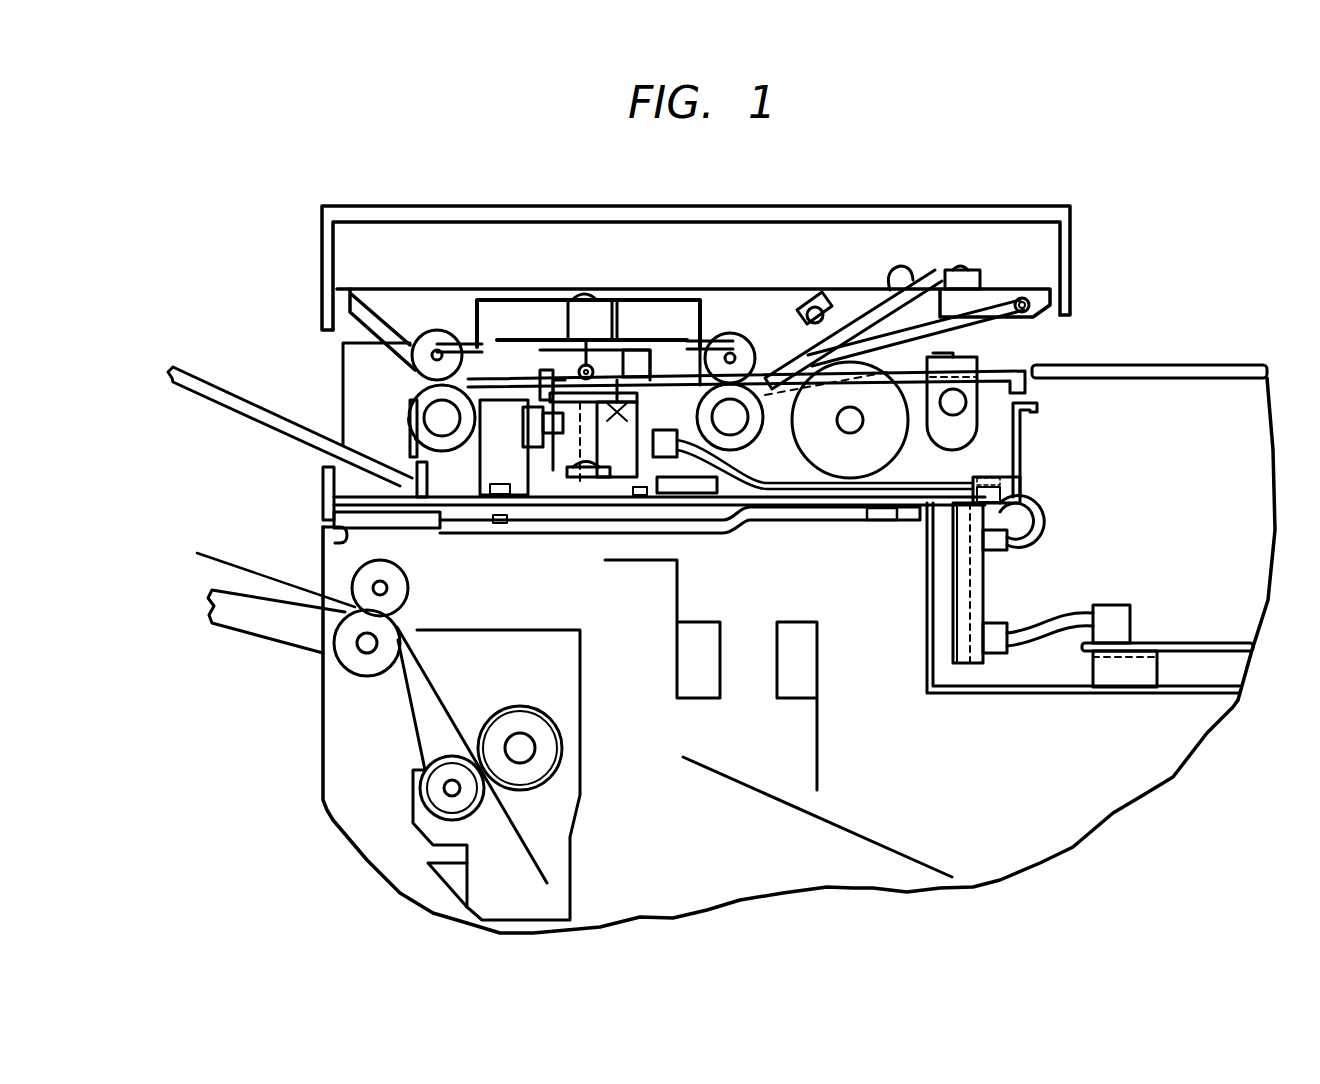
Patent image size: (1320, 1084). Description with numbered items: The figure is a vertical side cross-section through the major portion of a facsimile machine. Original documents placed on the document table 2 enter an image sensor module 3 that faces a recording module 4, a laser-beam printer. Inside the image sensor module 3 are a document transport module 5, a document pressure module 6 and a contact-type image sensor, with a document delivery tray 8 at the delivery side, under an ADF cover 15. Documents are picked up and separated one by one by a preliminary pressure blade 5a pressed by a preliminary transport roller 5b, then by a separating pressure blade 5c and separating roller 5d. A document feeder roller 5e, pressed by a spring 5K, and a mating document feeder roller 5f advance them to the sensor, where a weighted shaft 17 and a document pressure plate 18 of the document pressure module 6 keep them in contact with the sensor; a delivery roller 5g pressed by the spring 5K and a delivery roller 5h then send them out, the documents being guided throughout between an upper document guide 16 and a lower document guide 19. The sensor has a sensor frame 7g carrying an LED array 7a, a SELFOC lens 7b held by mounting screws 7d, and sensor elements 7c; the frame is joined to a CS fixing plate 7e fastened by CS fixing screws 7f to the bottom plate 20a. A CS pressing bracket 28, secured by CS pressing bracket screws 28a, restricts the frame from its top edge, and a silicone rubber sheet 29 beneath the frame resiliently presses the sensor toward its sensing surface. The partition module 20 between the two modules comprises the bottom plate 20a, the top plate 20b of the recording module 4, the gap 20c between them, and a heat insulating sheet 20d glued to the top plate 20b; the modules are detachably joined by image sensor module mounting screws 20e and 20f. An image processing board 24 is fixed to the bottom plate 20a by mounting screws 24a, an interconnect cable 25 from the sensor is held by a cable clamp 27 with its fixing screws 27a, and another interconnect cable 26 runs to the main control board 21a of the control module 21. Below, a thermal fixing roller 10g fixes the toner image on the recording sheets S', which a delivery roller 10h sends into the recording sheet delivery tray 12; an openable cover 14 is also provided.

The document table 2 is at (1200, 372).
The image sensor module 3 is at (502, 235).
The recording module 4 is at (826, 870).
The document transport module 5 is at (713, 310).
The preliminary pressure blade 5a is at (1020, 298).
The preliminary transport roller 5b is at (977, 358).
The separating pressure blade 5c is at (868, 300).
The separating roller 5d is at (867, 373).
The document feeder roller 5e is at (735, 336).
The document feeder roller 5f is at (770, 377).
The delivery roller 5g is at (430, 336).
The delivery roller 5h is at (410, 402).
The spring 5K is at (510, 298).
The document pressure module 6 is at (612, 362).
The LED array 7a is at (596, 435).
The SELFOC lens 7b is at (590, 472).
The sensor elements 7c is at (578, 452).
The mounting screws 7d is at (528, 443).
The CS fixing plate 7e is at (692, 340).
The CS fixing screws 7f is at (703, 450).
The sensor frame 7g is at (545, 395).
The document delivery tray 8 is at (243, 398).
The thermal fixing roller 10g is at (520, 707).
The delivery roller 10h is at (398, 599).
The recording sheet delivery tray 12 is at (250, 623).
The openable cover 14 is at (325, 729).
The ADF cover 15 is at (705, 208).
The upper document guide 16 is at (342, 310).
The weighted shaft 17 is at (580, 345).
The document pressure plate 18 is at (622, 390).
The lower document guide 19 is at (1028, 368).
The partition module 20 is at (729, 535).
The bottom plate 20a is at (731, 530).
The top plate 20b is at (447, 537).
The gap 20c is at (607, 507).
The heat insulating sheet 20d is at (690, 532).
The image sensor module mounting screw 20e is at (872, 530).
The image sensor module mounting screw 20f is at (323, 541).
The control module 21 is at (1132, 392).
The main control board 21a is at (1183, 643).
The image processing board 24 is at (985, 599).
The image processing board mounting screws 24a is at (1014, 660).
The interconnect cable 25 is at (1040, 511).
The interconnect cable 26 is at (1067, 620).
The cable clamp 27 is at (990, 472).
The fixing screws 27a is at (1003, 490).
The CS pressing bracket 28 is at (485, 470).
The CS pressing bracket screws 28a is at (490, 537).
The silicone rubber sheet 29 is at (645, 507).
The recording sheets S' is at (276, 557).